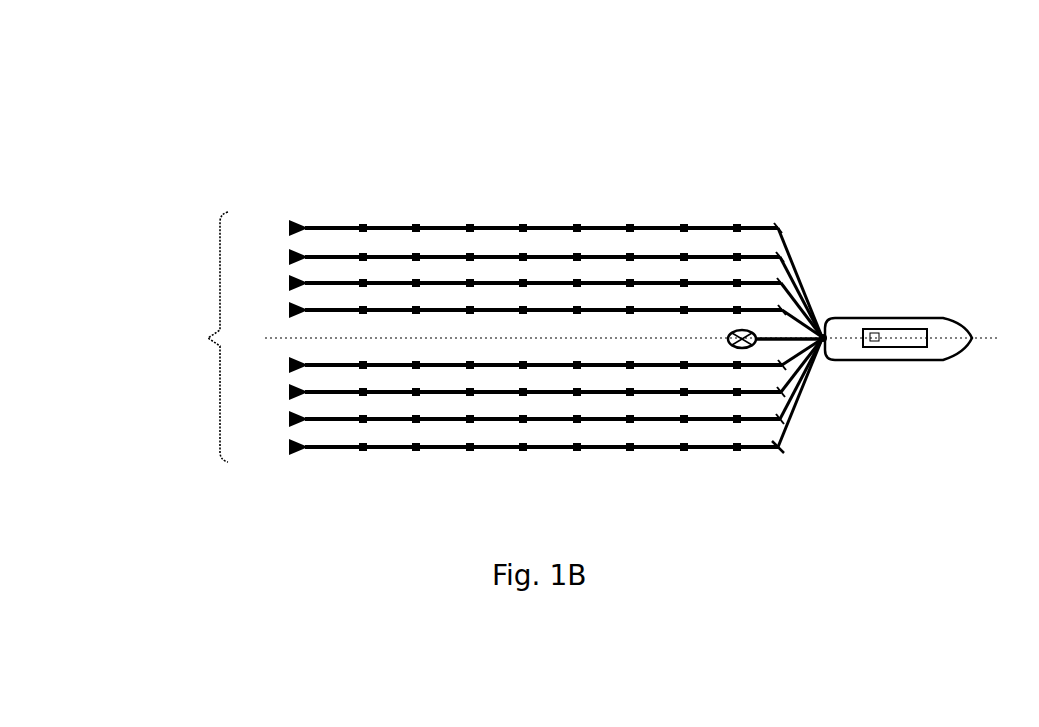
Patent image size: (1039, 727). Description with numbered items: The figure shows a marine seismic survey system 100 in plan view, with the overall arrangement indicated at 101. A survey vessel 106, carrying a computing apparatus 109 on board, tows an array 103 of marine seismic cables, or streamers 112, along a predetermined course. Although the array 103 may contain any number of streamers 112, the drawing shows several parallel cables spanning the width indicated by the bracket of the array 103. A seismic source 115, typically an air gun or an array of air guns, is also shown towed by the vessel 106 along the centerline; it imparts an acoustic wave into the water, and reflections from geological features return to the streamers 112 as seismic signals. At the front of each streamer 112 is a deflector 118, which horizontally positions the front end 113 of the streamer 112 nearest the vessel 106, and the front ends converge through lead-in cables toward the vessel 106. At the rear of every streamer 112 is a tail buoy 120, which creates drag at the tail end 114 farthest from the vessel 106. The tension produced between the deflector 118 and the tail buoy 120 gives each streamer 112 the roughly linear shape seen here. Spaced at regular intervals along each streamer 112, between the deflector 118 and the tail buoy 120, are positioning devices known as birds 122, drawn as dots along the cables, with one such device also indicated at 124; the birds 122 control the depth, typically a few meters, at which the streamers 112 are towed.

The marine seismic survey system 101 is at (212, 56).
The survey system 100 is at (372, 144).
The array 103 is at (188, 337).
The survey vessel 106 is at (938, 318).
The computing apparatus 109 is at (876, 349).
The streamer 112 is at (550, 227).
The front end 113 is at (768, 450).
The tail end 114 is at (306, 452).
The seismic source 115 is at (728, 340).
The deflector 118 is at (781, 227).
The tail buoy 120 is at (290, 225).
The birds 122 is at (735, 226).
The sensor 124 is at (361, 226).